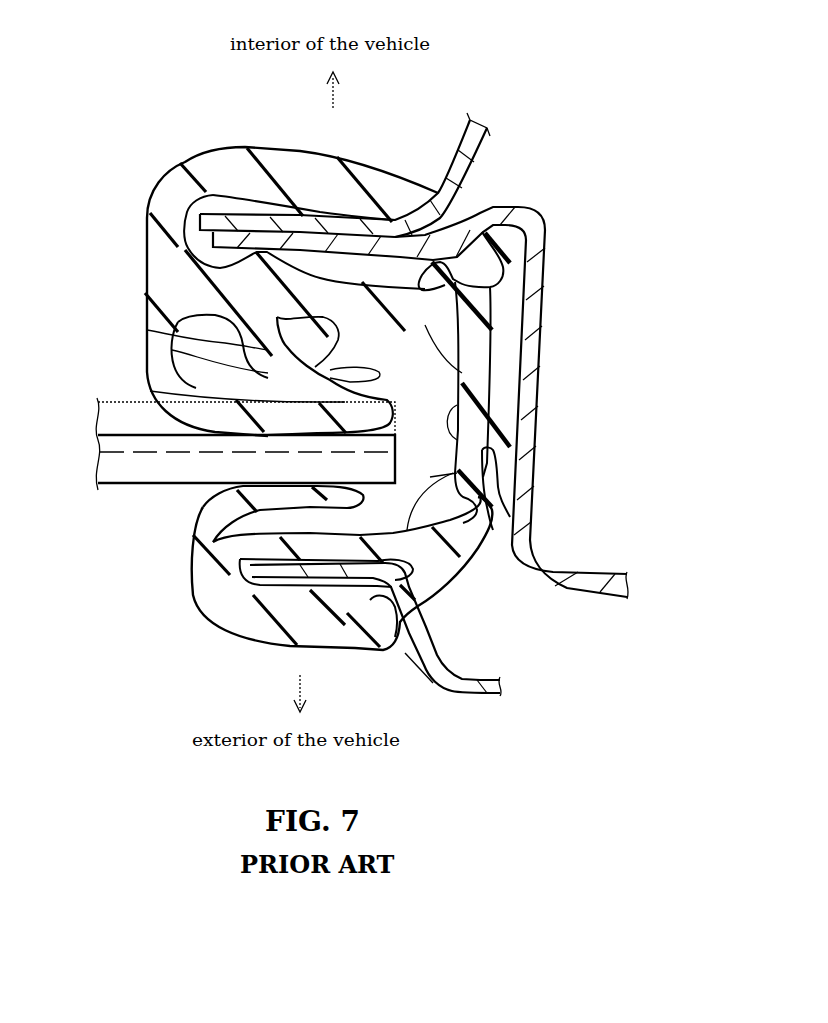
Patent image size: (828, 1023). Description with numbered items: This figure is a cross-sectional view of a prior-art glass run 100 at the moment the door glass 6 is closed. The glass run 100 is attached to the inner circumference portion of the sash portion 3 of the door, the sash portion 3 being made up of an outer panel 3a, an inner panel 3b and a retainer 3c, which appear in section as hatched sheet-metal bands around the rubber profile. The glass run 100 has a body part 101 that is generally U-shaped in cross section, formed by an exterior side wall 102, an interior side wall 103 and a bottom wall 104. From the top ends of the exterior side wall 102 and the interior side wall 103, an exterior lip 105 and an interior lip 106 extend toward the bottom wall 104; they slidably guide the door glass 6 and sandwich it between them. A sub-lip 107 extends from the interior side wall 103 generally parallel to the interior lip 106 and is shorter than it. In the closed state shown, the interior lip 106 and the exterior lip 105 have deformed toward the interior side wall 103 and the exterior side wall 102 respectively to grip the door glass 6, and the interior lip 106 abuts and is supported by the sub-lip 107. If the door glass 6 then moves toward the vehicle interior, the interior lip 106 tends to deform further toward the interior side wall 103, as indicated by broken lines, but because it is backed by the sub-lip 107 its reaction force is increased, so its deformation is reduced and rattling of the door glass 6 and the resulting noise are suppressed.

The glass run 100 is at (353, 398).
The sash portion 3 is at (448, 438).
The outer panel 3a is at (472, 697).
The inner panel 3b is at (475, 158).
The retainer 3c is at (543, 333).
The body part 101 is at (533, 381).
The exterior side wall 102 is at (506, 500).
The interior side wall 103 is at (470, 373).
The bottom wall 104 is at (460, 410).
The exterior lip 105 is at (203, 507).
The interior lip 106 is at (152, 391).
The sub-lip 107 is at (147, 330).
The door glass 6 is at (108, 493).